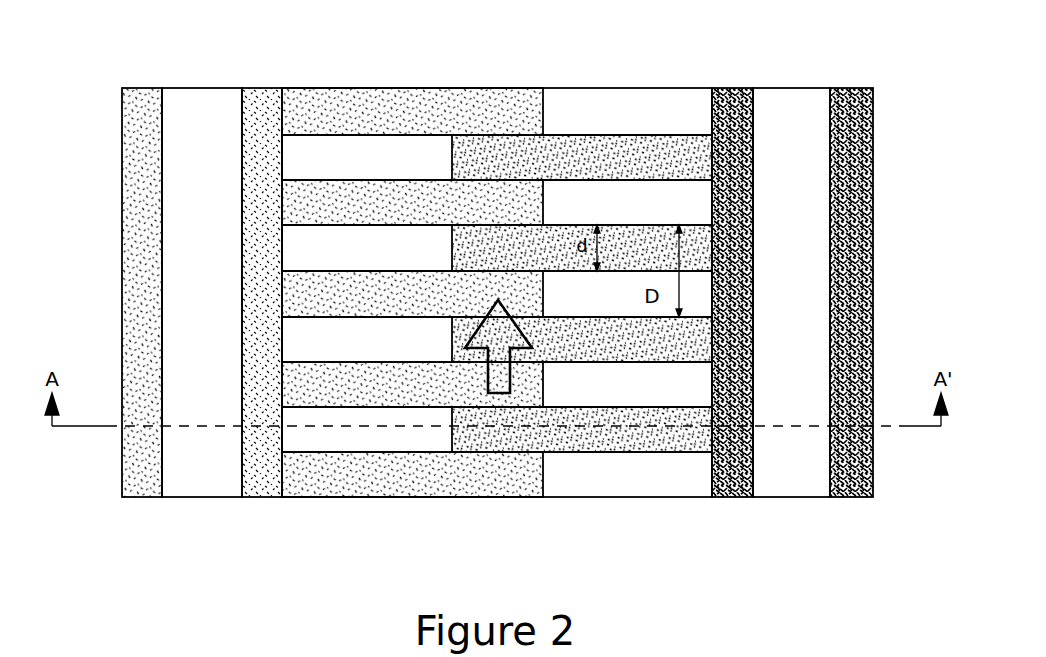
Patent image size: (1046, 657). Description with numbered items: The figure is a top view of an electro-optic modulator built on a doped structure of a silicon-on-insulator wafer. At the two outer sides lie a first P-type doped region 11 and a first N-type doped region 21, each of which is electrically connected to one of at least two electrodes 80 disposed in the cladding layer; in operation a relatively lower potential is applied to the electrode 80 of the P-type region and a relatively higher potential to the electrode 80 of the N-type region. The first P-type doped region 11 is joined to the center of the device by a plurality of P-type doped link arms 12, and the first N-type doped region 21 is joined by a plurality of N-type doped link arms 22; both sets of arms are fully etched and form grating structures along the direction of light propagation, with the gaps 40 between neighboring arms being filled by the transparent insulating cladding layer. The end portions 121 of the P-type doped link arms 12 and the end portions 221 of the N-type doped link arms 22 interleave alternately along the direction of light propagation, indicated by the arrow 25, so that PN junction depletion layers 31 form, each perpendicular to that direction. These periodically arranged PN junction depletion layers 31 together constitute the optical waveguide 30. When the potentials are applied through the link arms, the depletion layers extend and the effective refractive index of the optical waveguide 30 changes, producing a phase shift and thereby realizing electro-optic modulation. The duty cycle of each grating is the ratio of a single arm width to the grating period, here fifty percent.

The first P-type doped region 11 is at (140, 148).
The first N-type doped region 21 is at (855, 100).
The electrodes 80 is at (200, 118).
The gaps 40 is at (323, 160).
The P-type doped link arms 12 is at (377, 110).
The N-type doped link arms 22 is at (640, 145).
The end portions of P-type doped link arms 121 is at (497, 110).
The end portions of N-type doped link arms 221 is at (512, 150).
The PN junction depletion layers 31 is at (470, 135).
The optical waveguide 30 is at (545, 502).
The arrow 25 is at (488, 370).